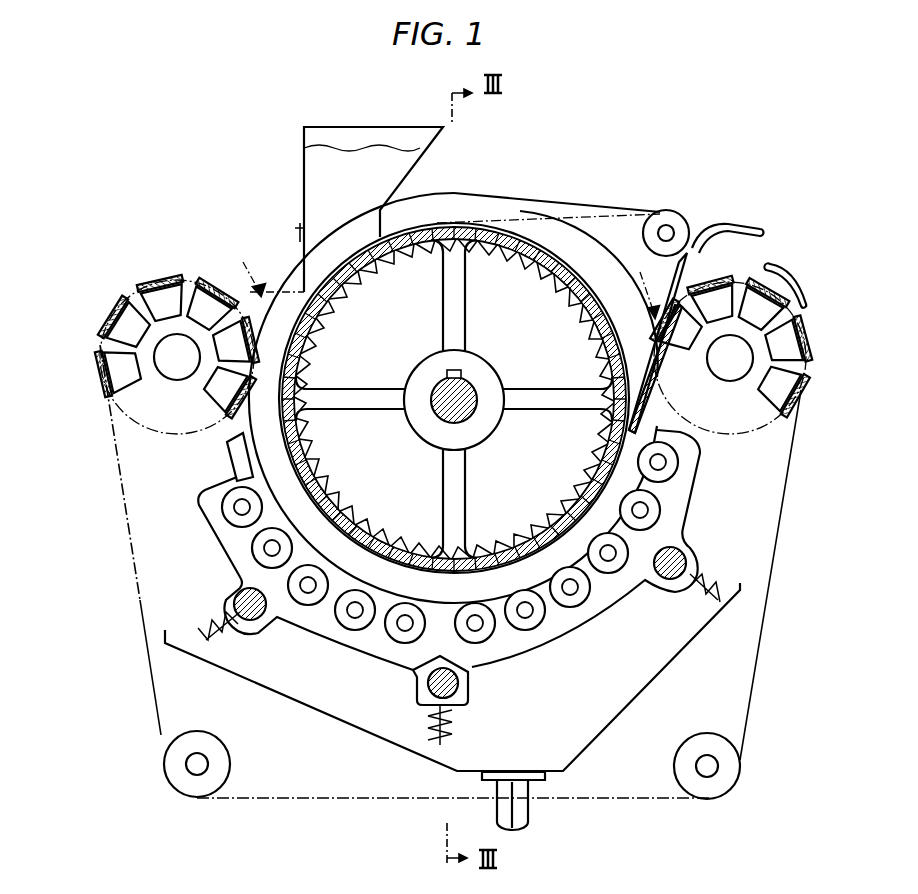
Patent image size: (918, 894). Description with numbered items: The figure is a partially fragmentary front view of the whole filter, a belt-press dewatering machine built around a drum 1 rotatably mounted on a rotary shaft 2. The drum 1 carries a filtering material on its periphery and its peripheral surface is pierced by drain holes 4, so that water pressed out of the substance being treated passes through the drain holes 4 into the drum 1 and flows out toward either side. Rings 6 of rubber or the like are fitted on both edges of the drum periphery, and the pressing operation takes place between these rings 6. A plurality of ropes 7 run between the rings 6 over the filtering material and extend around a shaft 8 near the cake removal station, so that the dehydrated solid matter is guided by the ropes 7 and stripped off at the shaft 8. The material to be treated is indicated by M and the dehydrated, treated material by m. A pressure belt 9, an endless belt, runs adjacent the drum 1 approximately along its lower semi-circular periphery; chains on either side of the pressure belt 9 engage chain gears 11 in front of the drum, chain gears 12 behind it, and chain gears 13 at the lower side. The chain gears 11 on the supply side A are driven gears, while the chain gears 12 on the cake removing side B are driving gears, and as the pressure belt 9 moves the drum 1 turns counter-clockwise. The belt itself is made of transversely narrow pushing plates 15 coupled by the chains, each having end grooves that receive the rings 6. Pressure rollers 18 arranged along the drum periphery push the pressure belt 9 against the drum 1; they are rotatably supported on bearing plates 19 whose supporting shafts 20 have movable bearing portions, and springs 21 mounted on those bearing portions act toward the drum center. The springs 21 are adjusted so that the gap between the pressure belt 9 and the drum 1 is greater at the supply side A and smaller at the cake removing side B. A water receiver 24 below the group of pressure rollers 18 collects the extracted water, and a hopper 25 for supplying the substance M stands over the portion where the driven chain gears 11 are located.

The drum 1 is at (510, 237).
The rotary shaft 2 is at (467, 413).
The drain holes 4 is at (352, 272).
The rings 6 is at (473, 200).
The ropes 7 is at (595, 207).
The shaft 8 is at (667, 210).
The pressure belt 9 is at (118, 514).
The chain gears 11 is at (148, 371).
The chain gears 12 is at (802, 333).
The chain gears 13 is at (170, 762).
The pushing plates 15 is at (798, 411).
The pressure rollers 18 is at (340, 640).
The bearing plates 19 is at (224, 543).
The supporting shafts 20 is at (254, 621).
The springs 21 is at (207, 626).
The water receiver 24 is at (331, 714).
The hopper 25 is at (304, 178).
The material to be treated M is at (325, 147).
The dehydrated treated material m is at (783, 266).
The supply side A is at (261, 267).
The cake removing side B is at (638, 284).